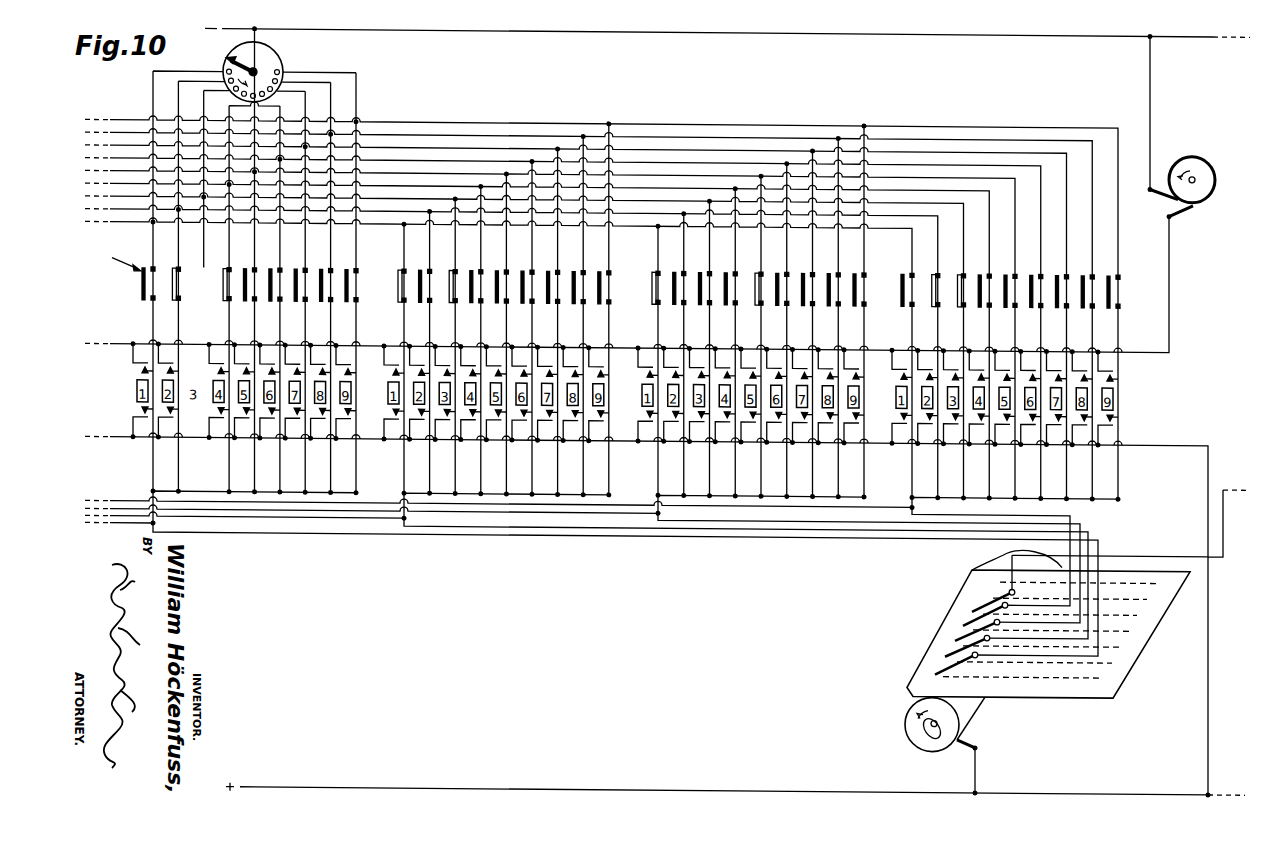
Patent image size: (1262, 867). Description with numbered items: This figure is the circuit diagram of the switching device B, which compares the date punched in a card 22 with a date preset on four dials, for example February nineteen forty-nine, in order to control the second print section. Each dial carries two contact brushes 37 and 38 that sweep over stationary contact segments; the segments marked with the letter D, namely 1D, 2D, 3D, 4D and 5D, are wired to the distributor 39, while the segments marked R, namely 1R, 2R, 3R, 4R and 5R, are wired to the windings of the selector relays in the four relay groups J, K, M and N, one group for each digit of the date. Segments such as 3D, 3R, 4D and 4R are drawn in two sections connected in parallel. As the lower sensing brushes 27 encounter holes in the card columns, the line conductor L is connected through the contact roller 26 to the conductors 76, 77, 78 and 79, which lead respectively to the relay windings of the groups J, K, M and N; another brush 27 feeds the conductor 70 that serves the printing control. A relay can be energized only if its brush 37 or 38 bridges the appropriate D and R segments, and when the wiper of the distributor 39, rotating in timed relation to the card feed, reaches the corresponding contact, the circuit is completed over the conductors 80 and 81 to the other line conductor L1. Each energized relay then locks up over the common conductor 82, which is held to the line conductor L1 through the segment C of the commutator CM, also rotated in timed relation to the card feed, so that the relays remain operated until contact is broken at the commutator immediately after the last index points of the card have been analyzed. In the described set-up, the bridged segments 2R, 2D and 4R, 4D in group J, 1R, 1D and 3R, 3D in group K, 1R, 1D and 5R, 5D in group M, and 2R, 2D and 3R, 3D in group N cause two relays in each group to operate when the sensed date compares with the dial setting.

The distributor 39 is at (277, 53).
The contact brush 37 is at (174, 268).
The contact brush 38 is at (225, 270).
The conductor 80 is at (112, 224).
The conductor 81 is at (149, 220).
The common conductor 82 is at (135, 344).
The conductor 76 is at (693, 532).
The conductor 77 is at (738, 526).
The conductor 78 is at (778, 518).
The conductor 79 is at (823, 503).
The conductor 70 is at (1165, 549).
The sensing brush 27 is at (985, 603).
The card 22 is at (1070, 692).
The contact roller 26 is at (905, 722).
The switching device B is at (118, 259).
The commutator segment C is at (1208, 160).
The commutator CM is at (1193, 204).
The line conductor L is at (683, 786).
The line conductor L1 is at (676, 33).
The relay group J is at (239, 380).
The relay group K is at (493, 382).
The relay group M is at (747, 384).
The relay group N is at (1001, 386).
The contact segment 1D is at (404, 270).
The contact segment 2D is at (176, 268).
The contact segment 3D is at (455, 270).
The contact segment 4D is at (227, 268).
The contact segment 5D is at (760, 270).
The contact segment 1R is at (404, 299).
The contact segment 2R is at (176, 299).
The contact segment 3R is at (456, 299).
The contact segment 4R is at (227, 299).
The contact segment 5R is at (761, 299).